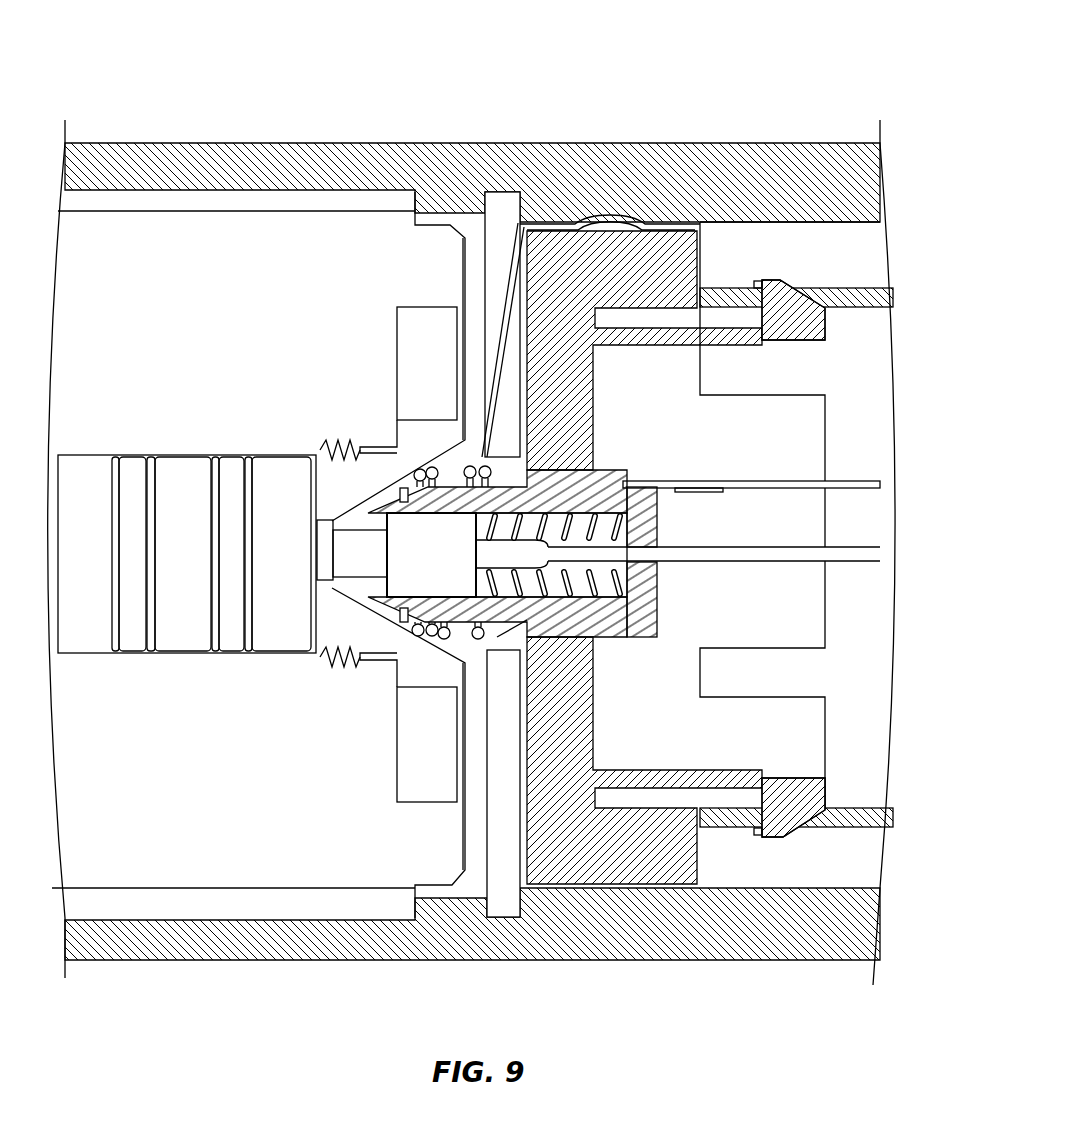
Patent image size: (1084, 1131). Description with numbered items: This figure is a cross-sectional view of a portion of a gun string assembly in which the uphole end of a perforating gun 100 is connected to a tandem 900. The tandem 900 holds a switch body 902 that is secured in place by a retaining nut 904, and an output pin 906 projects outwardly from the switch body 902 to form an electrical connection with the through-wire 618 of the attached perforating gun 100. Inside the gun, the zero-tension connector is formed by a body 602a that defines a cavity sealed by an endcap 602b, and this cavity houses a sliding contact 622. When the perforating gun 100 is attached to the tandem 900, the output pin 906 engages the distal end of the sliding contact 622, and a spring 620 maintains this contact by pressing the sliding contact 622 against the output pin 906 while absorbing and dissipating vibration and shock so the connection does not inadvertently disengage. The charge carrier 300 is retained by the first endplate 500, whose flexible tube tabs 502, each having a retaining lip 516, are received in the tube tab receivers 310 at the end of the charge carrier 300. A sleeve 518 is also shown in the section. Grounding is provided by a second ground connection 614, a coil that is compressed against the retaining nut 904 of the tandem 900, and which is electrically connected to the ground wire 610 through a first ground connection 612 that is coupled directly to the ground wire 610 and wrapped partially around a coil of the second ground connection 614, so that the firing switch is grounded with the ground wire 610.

The perforating gun 100 is at (728, 42).
The charge carrier 300 is at (863, 277).
The tube tab receivers 310 is at (792, 272).
The first endplate 500 is at (662, 242).
The tube tabs 502 is at (768, 292).
The retaining lip 516 is at (756, 286).
The sleeve 518 is at (810, 405).
The ground wire 610 is at (740, 480).
The first ground connection 612 is at (550, 217).
The second ground connection 614 is at (420, 466).
The through-wire 618 is at (740, 542).
The spring 620 is at (596, 522).
The sliding contact 622 is at (422, 572).
The body 602a is at (612, 620).
The endcap 602b is at (647, 596).
The tandem 900 is at (220, 360).
The switch body 902 is at (80, 472).
The retaining nut 904 is at (334, 452).
The output pin 906 is at (362, 570).